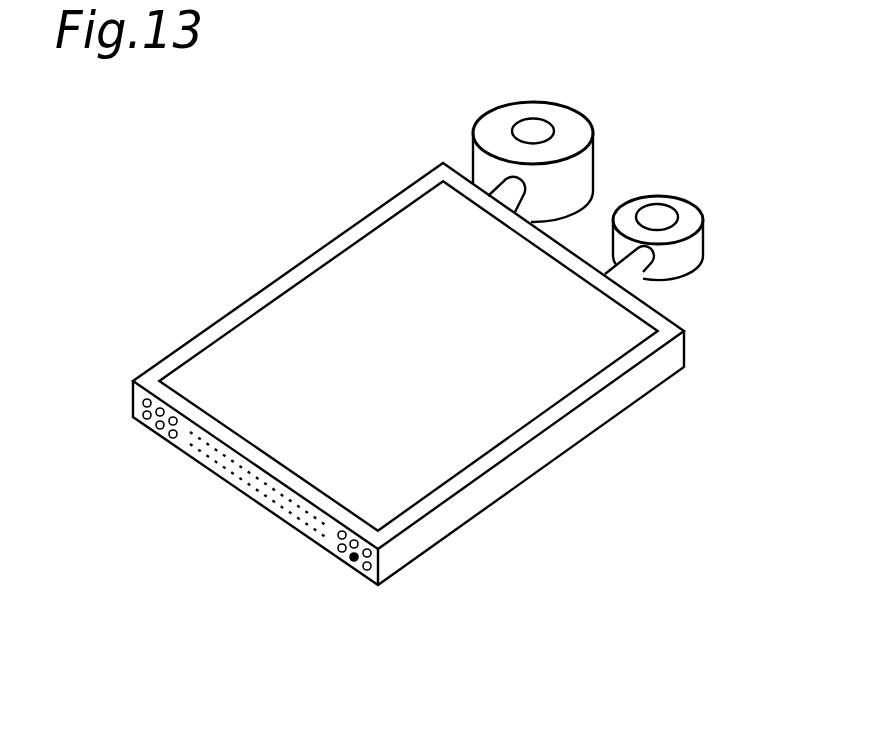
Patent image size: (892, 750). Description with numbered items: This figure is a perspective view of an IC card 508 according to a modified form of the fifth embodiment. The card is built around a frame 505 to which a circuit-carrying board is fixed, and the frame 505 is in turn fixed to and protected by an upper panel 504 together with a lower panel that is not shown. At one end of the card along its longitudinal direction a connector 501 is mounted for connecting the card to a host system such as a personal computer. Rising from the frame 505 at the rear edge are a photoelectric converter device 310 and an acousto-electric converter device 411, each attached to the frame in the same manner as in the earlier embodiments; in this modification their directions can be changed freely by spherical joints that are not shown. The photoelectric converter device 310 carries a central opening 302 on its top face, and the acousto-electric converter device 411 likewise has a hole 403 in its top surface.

The IC card 508 is at (428, 390).
The frame 505 is at (595, 425).
The upper panel 504 is at (572, 355).
The connector 501 is at (350, 560).
The photoelectric converter device 310 is at (546, 136).
The connector opening 302 is at (543, 130).
The acousto-electric converter device 411 is at (693, 205).
The connector hole 403 is at (655, 212).